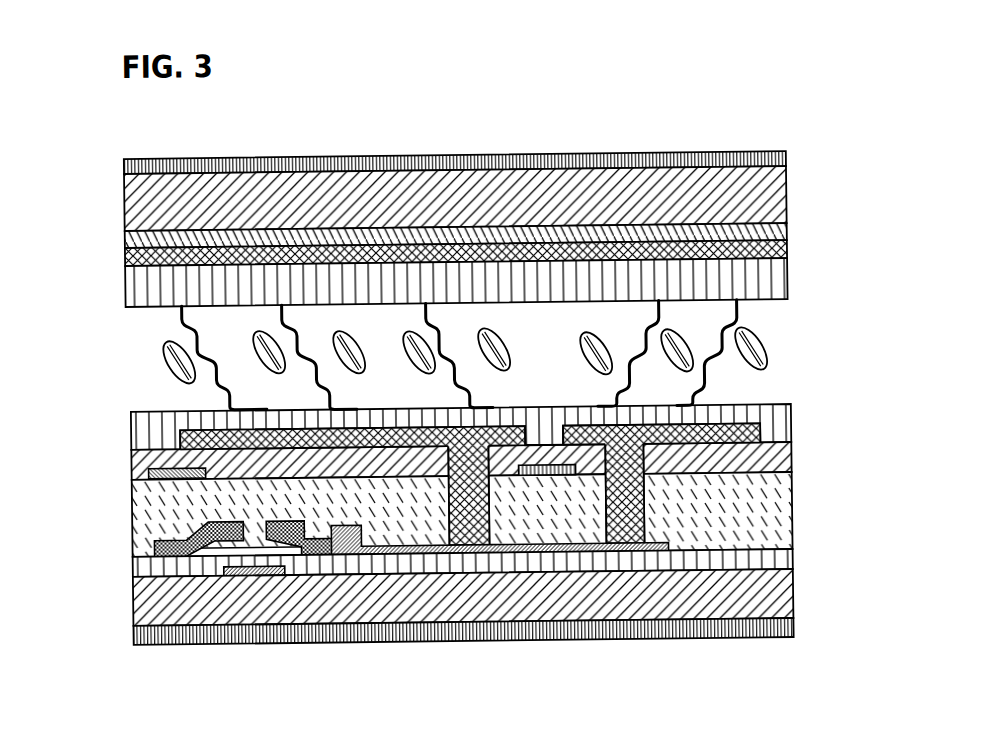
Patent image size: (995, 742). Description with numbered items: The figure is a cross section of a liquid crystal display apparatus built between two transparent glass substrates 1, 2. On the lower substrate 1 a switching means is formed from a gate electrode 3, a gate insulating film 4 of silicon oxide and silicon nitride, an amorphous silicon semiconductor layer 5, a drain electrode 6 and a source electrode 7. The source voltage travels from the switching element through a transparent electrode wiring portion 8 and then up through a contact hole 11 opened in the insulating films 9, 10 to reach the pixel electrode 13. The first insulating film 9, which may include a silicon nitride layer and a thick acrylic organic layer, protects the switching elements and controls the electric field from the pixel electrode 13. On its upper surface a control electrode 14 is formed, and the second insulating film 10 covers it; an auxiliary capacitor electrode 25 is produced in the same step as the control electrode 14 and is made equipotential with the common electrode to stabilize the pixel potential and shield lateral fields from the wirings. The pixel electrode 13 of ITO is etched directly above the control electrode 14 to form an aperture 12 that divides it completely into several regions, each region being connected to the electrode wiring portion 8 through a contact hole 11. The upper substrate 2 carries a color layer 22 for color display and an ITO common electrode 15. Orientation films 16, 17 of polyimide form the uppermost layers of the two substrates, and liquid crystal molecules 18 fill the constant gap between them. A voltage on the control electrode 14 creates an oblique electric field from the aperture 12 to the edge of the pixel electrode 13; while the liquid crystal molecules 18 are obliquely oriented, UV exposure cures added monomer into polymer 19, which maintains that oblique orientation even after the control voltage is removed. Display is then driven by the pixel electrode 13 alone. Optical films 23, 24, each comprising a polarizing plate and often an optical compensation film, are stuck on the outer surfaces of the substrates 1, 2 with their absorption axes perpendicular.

The substrate 1 is at (793, 604).
The substrate 2 is at (780, 202).
The gate electrode 3 is at (243, 570).
The gate insulating film 4 is at (793, 562).
The semiconductor layer 5 is at (291, 553).
The drain electrode 6 is at (161, 556).
The source electrode 7 is at (350, 553).
The electrode wiring portion 8 is at (421, 553).
The insulating film 9 is at (794, 514).
The insulating film 10 is at (793, 462).
The contact hole 11 is at (463, 533).
The aperture 12 is at (545, 438).
The pixel electrode 13 is at (178, 436).
The control electrode 14 is at (546, 472).
The common electrode 15 is at (784, 254).
The orientation film 16 is at (787, 427).
The orientation film 17 is at (785, 281).
The liquid crystal molecules 18 is at (762, 339).
The polymer 19 is at (701, 396).
The color layer 22 is at (785, 231).
The optical film 23 is at (793, 631).
The optical film 24 is at (789, 156).
The auxiliary capacitor electrode 25 is at (148, 468).